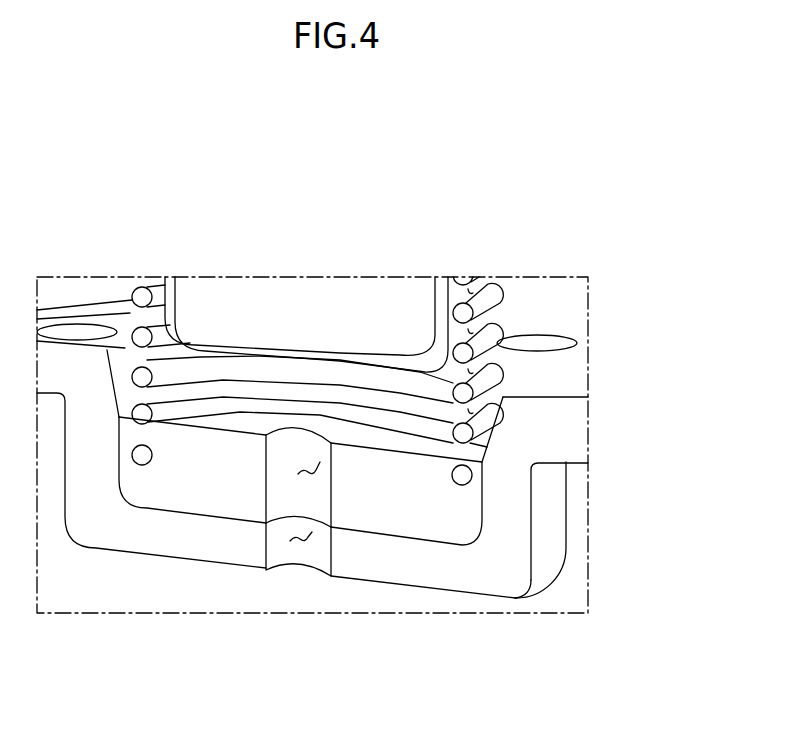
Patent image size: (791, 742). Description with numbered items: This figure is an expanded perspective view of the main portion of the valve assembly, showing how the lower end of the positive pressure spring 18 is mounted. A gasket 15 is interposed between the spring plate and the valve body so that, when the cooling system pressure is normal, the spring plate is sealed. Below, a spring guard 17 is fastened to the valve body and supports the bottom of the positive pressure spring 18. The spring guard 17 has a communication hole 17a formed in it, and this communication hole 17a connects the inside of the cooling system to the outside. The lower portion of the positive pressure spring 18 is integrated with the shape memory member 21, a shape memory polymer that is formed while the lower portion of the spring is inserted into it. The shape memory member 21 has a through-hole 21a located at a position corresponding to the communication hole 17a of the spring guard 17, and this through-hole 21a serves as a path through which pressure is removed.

The gasket 15 is at (180, 322).
The spring guard 17 is at (515, 508).
The communication hole 17a is at (300, 543).
The positive pressure spring 18 is at (488, 382).
The shape memory member 21 is at (190, 490).
The through-hole 21a is at (310, 473).